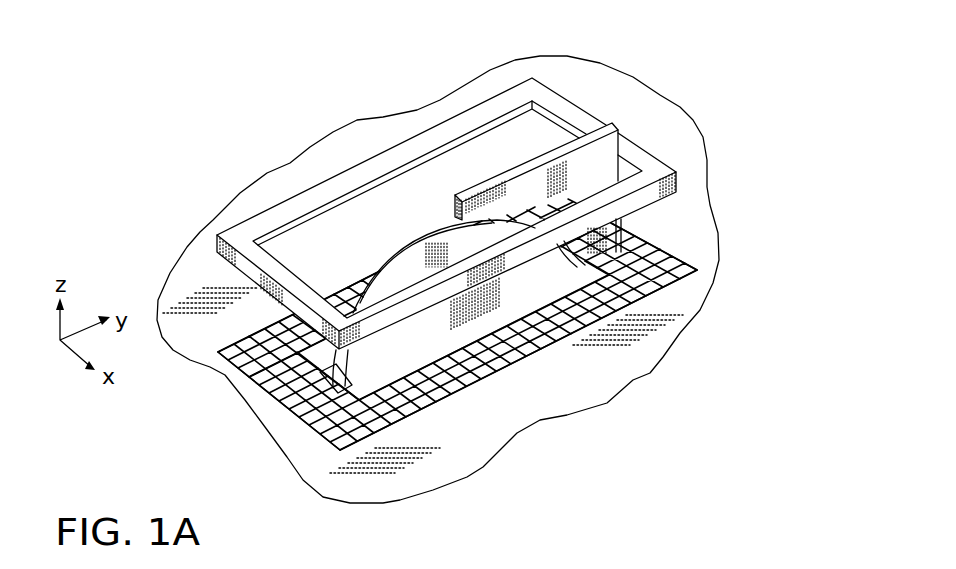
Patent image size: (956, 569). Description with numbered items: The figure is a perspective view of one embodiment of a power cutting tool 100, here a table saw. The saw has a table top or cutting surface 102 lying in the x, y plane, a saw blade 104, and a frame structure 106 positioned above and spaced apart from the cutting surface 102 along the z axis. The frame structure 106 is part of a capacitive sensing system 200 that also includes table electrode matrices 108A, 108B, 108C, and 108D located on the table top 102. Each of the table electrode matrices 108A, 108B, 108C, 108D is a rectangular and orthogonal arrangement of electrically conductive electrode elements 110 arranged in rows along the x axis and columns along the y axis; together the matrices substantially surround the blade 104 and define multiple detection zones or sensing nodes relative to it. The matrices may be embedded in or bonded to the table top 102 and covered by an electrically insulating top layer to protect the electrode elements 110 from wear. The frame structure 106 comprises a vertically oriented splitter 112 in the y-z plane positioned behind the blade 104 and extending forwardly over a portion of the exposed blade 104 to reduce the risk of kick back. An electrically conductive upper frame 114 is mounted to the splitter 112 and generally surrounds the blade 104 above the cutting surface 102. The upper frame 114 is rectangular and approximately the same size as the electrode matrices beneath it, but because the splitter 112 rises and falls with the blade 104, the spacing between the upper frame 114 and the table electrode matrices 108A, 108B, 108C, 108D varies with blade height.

The power cutting tool 100 is at (458, 284).
The table top 102 is at (577, 373).
The saw blade 104 is at (410, 268).
The frame structure 106 is at (658, 134).
The table electrode matrix 108A is at (266, 325).
The table electrode matrix 108B is at (463, 392).
The table electrode matrix 108C is at (279, 402).
The table electrode matrix 108D is at (658, 236).
The electrically conductive electrode elements 110 is at (695, 260).
The splitter 112 is at (604, 150).
The upper frame 114 is at (660, 155).
The capacitive sensing system 200 is at (666, 299).